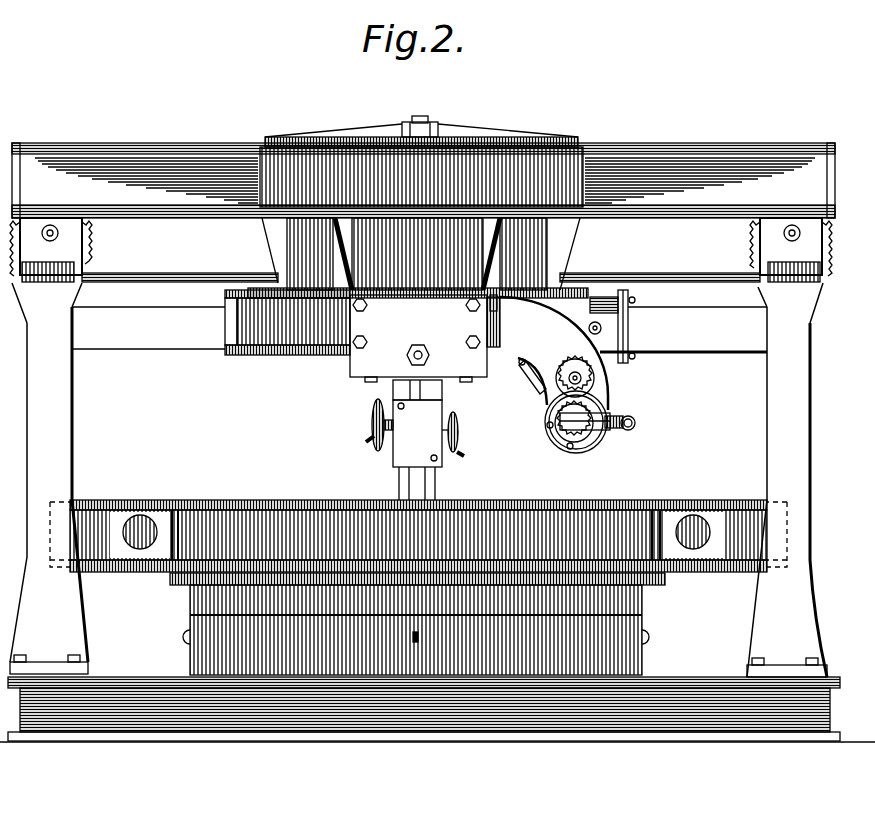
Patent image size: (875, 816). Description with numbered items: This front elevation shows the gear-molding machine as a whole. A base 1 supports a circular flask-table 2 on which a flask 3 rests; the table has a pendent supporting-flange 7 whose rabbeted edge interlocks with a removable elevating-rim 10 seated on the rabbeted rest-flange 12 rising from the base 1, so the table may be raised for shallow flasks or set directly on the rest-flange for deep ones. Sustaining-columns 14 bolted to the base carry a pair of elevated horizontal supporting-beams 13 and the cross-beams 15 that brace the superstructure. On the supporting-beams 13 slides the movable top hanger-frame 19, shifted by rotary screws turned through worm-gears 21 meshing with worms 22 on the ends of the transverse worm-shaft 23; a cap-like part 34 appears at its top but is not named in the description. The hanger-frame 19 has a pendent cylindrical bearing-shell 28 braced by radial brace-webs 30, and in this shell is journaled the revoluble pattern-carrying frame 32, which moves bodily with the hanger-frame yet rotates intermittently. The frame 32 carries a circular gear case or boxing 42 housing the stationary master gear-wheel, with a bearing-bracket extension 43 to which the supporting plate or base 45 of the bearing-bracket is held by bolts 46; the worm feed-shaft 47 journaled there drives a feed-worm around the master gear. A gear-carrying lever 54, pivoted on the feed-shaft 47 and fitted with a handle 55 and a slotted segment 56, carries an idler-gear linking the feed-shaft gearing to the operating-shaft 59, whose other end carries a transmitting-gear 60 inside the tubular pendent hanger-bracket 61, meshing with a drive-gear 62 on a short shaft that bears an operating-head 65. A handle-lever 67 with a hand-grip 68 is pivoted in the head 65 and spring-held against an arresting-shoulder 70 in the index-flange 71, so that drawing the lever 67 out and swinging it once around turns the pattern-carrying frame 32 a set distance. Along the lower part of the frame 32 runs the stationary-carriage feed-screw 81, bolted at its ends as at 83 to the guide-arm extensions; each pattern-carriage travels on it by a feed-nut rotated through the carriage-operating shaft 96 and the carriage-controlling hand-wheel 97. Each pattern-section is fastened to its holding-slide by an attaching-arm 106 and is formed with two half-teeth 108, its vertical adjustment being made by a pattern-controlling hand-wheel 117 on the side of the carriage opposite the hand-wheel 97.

The base 1 is at (313, 732).
The flask-table 2 is at (176, 586).
The flask 3 is at (222, 504).
The pendent supporting-flange 7 is at (642, 604).
The removable elevating-rim 10 is at (640, 628).
The rest-flange 12 is at (650, 666).
The elevated horizontal supporting-beams 13 is at (65, 243).
The sustaining-columns 14 is at (62, 405).
The cross-beams 15 is at (160, 344).
The movable top hanger-frame 19 is at (178, 150).
The worm-gears 21 is at (88, 233).
The worms 22 is at (54, 288).
The transverse worm-shaft 23 is at (150, 283).
The cylindrical bearing-shell 28 is at (266, 258).
The brace-webs 30 is at (266, 232).
The revoluble pattern-carrying frame 32 is at (362, 335).
The cap 34 is at (427, 119).
The circular gear case or boxing 42 is at (230, 326).
The bearing-bracket extension 43 is at (598, 298).
The supporting plate or base 45 is at (632, 325).
The bolts 46 is at (636, 300).
The worm feed-shaft 47 is at (588, 328).
The gear-carrying lever 54 is at (544, 394).
The handle 55 is at (524, 396).
The slotted segment 56 is at (520, 365).
The operating-shaft 59 is at (582, 380).
The transmitting-gear 60 is at (568, 367).
The tubular hanger-bracket 61 is at (606, 390).
The drive-gear 62 is at (566, 452).
The operating-head 65 is at (566, 438).
The handle-lever 67 is at (618, 430).
The hand-grip 68 is at (636, 422).
The arresting-shoulder 70 is at (604, 444).
The index-flange 71 is at (575, 450).
The stationary-carriage feed-screw 81 is at (420, 350).
The bolts 83 is at (410, 350).
The carriage-operating shaft 96 is at (368, 440).
The carriage-controlling hand-wheel 97 is at (372, 414).
The attaching-arm 106 is at (417, 423).
The half-teeth 108 is at (402, 485).
The pattern-controlling hand-wheel 117 is at (460, 456).